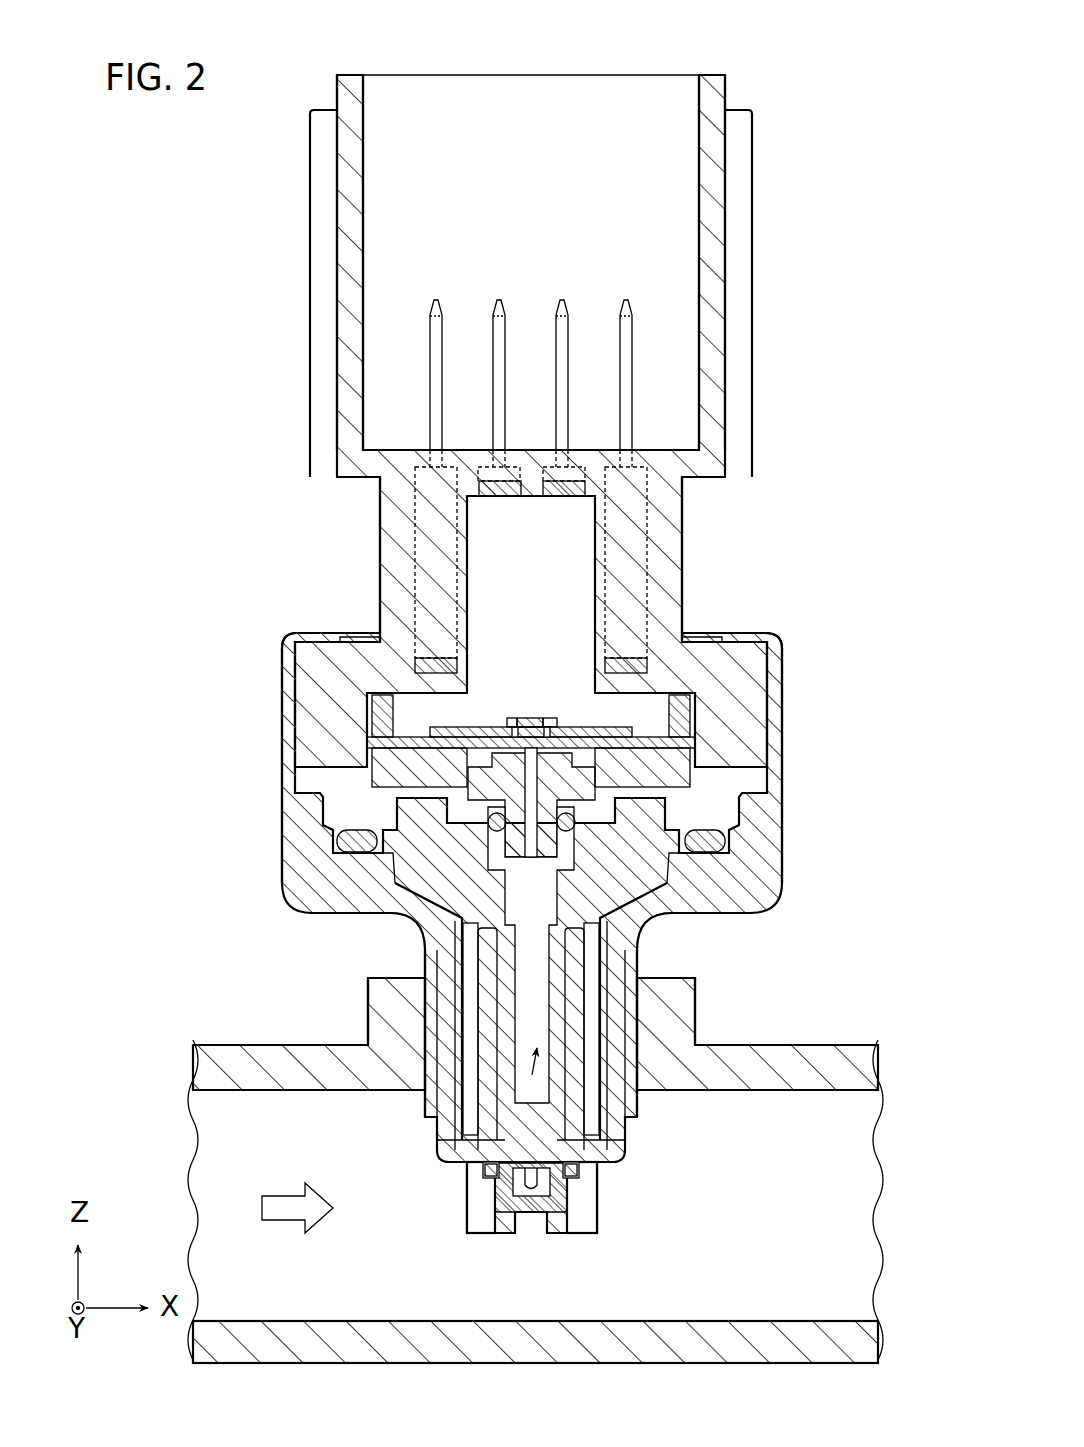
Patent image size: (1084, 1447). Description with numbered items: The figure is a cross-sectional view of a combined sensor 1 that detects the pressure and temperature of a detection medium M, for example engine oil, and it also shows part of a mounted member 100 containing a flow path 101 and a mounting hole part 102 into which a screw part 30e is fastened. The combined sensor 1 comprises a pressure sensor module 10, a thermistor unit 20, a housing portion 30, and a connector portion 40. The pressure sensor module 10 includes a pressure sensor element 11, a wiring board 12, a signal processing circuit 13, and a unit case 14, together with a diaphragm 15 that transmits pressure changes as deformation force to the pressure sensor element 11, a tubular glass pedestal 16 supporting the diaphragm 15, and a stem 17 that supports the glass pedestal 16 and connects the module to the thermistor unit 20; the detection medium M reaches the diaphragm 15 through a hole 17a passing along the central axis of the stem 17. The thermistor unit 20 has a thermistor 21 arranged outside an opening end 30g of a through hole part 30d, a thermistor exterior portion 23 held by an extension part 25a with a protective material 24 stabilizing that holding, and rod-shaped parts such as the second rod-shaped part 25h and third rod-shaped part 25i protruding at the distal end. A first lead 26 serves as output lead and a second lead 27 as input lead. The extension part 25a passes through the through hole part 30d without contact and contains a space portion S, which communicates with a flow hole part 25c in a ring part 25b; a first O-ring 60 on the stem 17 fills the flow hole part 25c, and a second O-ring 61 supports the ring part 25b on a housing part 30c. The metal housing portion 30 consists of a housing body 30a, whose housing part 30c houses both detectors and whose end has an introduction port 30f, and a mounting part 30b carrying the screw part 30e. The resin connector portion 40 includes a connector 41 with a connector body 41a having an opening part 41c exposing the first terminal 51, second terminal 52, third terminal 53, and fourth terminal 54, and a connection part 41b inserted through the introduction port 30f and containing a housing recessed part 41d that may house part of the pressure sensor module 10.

The combined sensor 1 is at (833, 100).
The pressure sensor module 10 is at (745, 690).
The pressure sensor element 11 is at (531, 717).
The wiring board 12 is at (507, 718).
The signal processing circuit 13 is at (551, 717).
The unit case 14 is at (740, 745).
The diaphragm 15 is at (521, 717).
The glass pedestal 16 is at (556, 728).
The stem 17 is at (367, 742).
The hole 17a is at (425, 940).
The thermistor unit 20 is at (612, 884).
The thermistor 21 is at (527, 1212).
The thermistor exterior portion 23 is at (498, 1218).
The protective material 24 is at (565, 1200).
The extension part 25a is at (612, 970).
The ring part 25b is at (745, 780).
The flow hole part 25c is at (400, 905).
The second rod-shaped part 25h is at (474, 1233).
The third rod-shaped part 25i is at (590, 1233).
The first lead 26 is at (580, 1103).
The second lead 27 is at (447, 1138).
The housing portion 30 is at (795, 903).
The housing body 30a is at (281, 815).
The mounting part 30b is at (423, 998).
The housing part 30c is at (284, 662).
The through hole part 30d is at (627, 1032).
The screw part 30e is at (453, 1028).
The introduction port 30f is at (345, 633).
The opening end 30g is at (603, 1162).
The connector portion 40 is at (775, 305).
The connector 41 is at (873, 464).
The connector body 41a is at (720, 395).
The connection part 41b is at (735, 633).
The opening part 41c is at (705, 115).
The housing recessed part 41d is at (700, 715).
The first terminal 51 is at (635, 325).
The second terminal 52 is at (446, 325).
The third terminal 53 is at (508, 325).
The fourth terminal 54 is at (571, 325).
The first O-ring 60 is at (340, 848).
The second O-ring 61 is at (735, 842).
The mounted member 100 is at (228, 1050).
The flow path 101 is at (805, 1320).
The mounting hole part 102 is at (637, 998).
The space portion S is at (512, 1060).
The detection medium M is at (281, 1208).